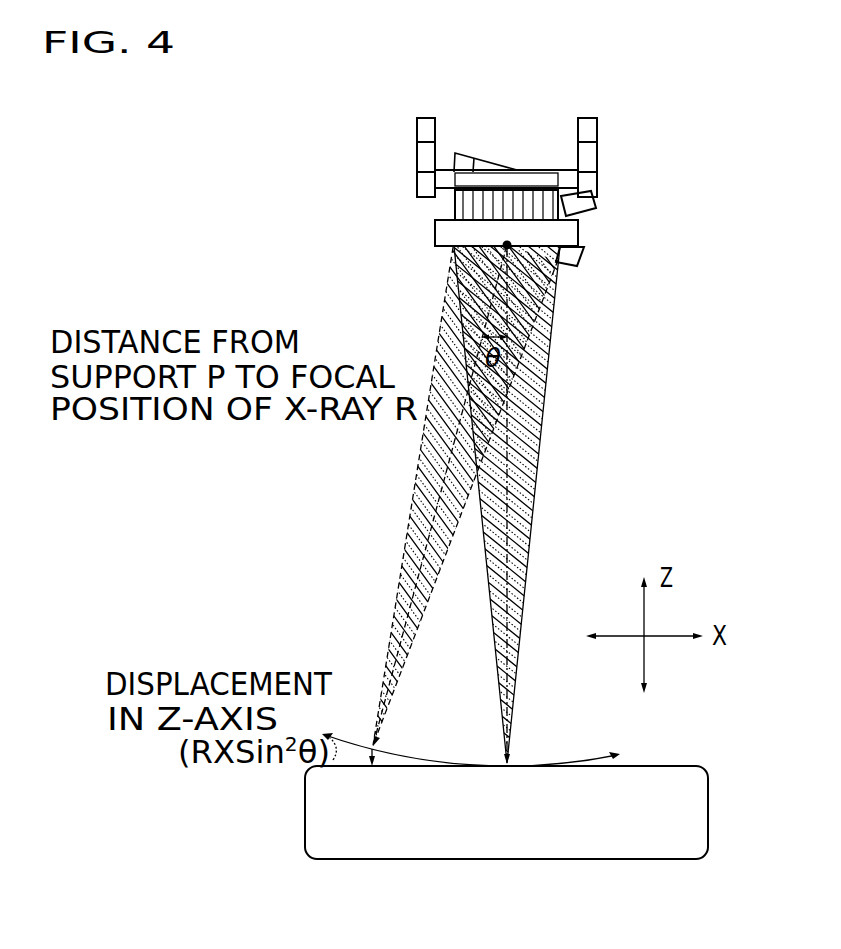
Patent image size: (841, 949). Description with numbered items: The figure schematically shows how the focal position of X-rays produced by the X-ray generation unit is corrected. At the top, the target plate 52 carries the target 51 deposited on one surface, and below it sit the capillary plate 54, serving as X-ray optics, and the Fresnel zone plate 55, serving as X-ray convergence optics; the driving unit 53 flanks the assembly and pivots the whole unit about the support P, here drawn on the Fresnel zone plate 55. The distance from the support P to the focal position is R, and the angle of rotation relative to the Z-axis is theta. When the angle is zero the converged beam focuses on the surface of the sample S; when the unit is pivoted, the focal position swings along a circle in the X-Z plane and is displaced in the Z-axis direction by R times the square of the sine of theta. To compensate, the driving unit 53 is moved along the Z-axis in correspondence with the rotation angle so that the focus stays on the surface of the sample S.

The target 51 is at (485, 173).
The target plate 52 is at (567, 173).
The driving unit 53 is at (423, 130).
The capillary plate 54 is at (463, 210).
The Fresnel zone plate 55 is at (442, 235).
The support P is at (507, 245).
The sample S is at (650, 765).